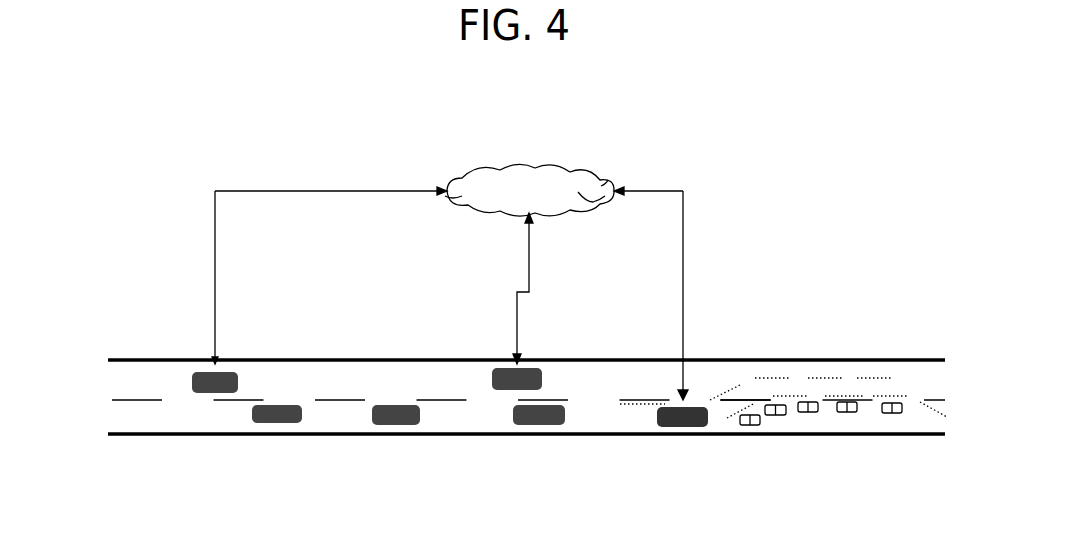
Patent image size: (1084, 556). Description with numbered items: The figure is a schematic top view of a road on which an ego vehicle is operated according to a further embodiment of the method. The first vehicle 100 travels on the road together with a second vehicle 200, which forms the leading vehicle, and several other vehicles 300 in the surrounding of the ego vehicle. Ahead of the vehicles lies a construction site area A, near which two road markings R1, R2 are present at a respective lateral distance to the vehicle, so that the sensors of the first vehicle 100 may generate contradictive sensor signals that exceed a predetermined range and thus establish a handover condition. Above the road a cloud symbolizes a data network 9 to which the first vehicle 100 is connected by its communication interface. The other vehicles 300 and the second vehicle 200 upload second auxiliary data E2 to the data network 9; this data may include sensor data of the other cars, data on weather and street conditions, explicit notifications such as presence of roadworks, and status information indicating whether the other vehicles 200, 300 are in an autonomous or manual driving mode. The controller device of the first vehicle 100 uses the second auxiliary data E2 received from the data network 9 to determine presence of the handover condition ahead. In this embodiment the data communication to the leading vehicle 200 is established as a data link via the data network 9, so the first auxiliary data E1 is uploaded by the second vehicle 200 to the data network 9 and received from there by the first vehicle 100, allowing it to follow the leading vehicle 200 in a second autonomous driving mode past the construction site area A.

The data network 9 is at (545, 168).
The first vehicle 100 is at (210, 393).
The second vehicle 200 is at (680, 427).
The other vehicles 300 is at (278, 405).
The first auxiliary data E1 is at (215, 253).
The second auxiliary data E2 is at (529, 272).
The road marking R1 is at (125, 398).
The road marking R2 is at (795, 400).
The construction site area A is at (847, 421).